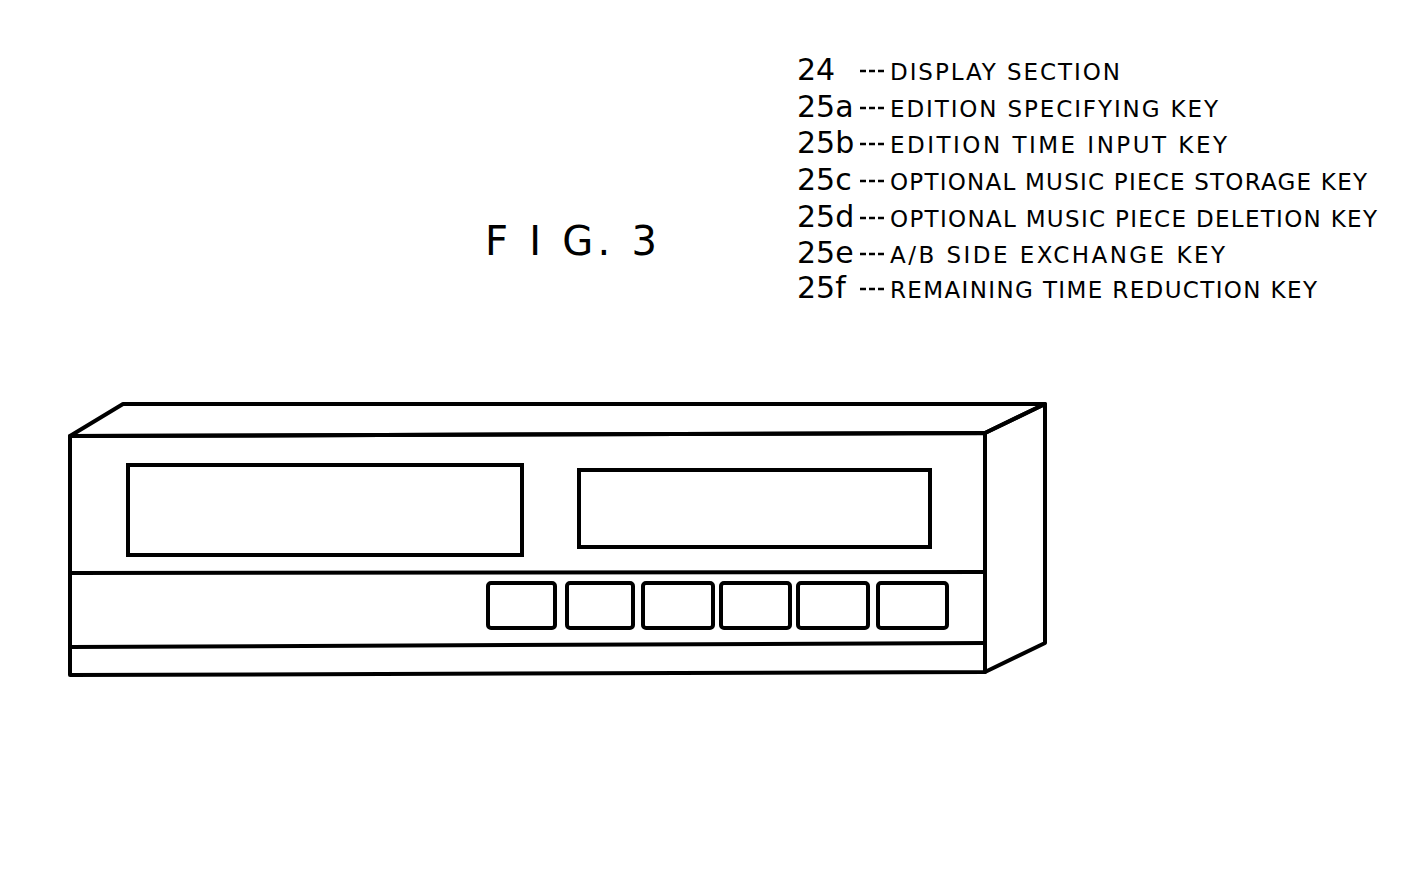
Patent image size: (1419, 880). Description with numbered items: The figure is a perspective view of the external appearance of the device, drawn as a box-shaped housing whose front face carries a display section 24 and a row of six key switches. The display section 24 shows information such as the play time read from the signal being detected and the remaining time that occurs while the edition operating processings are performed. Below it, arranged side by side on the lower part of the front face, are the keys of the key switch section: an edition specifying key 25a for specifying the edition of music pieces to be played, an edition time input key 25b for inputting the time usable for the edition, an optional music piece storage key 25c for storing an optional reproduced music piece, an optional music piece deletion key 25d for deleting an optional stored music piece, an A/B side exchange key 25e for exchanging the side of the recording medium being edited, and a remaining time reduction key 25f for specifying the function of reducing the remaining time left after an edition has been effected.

The display section 24 is at (752, 468).
The edition specifying key 25a is at (943, 628).
The edition time input key 25b is at (850, 628).
The optional music piece storage key 25c is at (767, 628).
The optional music piece deletion key 25d is at (677, 628).
The A/B side exchange key 25e is at (588, 628).
The remaining time reduction key 25f is at (493, 628).